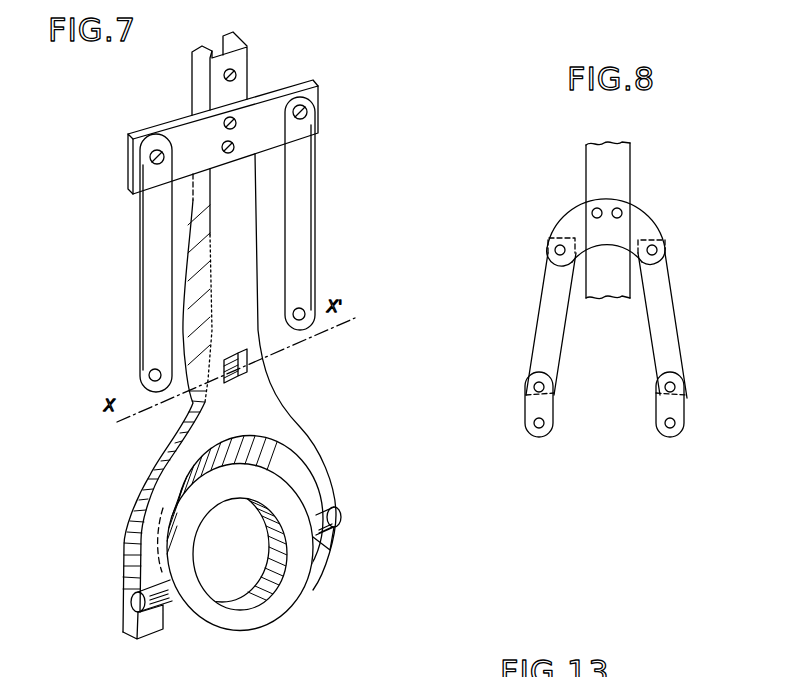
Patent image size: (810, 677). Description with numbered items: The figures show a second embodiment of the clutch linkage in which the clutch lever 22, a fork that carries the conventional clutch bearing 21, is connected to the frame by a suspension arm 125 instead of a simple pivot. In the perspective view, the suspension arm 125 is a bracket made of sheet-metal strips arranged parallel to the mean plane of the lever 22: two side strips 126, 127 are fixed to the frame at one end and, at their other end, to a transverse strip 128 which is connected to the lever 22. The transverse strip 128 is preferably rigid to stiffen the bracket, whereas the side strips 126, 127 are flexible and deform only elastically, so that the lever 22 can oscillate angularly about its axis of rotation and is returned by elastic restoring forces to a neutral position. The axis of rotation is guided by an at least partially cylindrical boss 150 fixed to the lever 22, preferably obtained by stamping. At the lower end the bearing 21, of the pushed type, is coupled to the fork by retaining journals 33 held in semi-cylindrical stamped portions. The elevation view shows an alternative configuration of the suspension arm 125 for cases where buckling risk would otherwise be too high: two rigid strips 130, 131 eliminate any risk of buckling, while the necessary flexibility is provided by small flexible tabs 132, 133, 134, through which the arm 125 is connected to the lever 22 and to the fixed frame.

In FIG. 7, the clutch bearing 21 is at (303, 583).
In FIG. 7, the clutch lever 22 is at (280, 402).
In FIG. 8, the clutch lever 22 is at (633, 165).
In FIG. 7, the retaining journals 33 is at (136, 600).
In FIG. 7, the suspension arm 125 is at (287, 82).
In FIG. 8, the suspension arm 125 is at (660, 235).
In FIG. 7, the side strip 126 is at (153, 247).
In FIG. 7, the side strip 127 is at (305, 202).
In FIG. 7, the transverse strip 128 is at (172, 128).
In FIG. 8, the rigid strip 130 is at (562, 318).
In FIG. 8, the rigid strip 131 is at (655, 350).
In FIG. 8, the flexible tab 132 is at (578, 222).
In FIG. 8, the flexible tab 133 is at (547, 428).
In FIG. 8, the flexible tab 134 is at (661, 428).
In FIG. 7, the cylindrical boss 150 is at (238, 378).